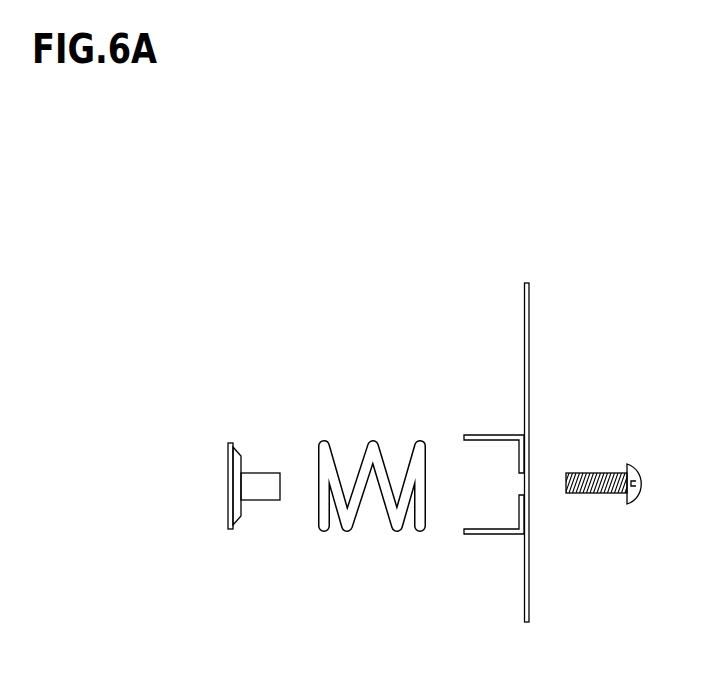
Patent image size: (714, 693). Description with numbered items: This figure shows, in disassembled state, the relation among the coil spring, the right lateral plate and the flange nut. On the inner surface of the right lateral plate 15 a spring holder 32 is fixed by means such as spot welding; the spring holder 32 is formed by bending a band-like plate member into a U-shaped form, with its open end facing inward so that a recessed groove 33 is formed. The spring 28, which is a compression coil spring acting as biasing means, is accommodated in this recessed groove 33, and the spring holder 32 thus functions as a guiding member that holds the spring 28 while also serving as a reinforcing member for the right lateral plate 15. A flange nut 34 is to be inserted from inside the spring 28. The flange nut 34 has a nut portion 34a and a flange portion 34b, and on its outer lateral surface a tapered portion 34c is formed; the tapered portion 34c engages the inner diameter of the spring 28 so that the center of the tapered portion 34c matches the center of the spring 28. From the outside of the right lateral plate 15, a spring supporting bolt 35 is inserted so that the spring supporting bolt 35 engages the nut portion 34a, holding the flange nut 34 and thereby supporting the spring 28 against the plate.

The right lateral plate 15 is at (529, 335).
The spring 28 is at (346, 530).
The spring holder 32 is at (492, 535).
The recessed groove 33 is at (481, 476).
The flange nut 34 is at (263, 487).
The nut portion 34a is at (267, 473).
The flange portion 34b is at (228, 530).
The tapered portion 34c is at (236, 520).
The spring supporting bolt 35 is at (597, 473).